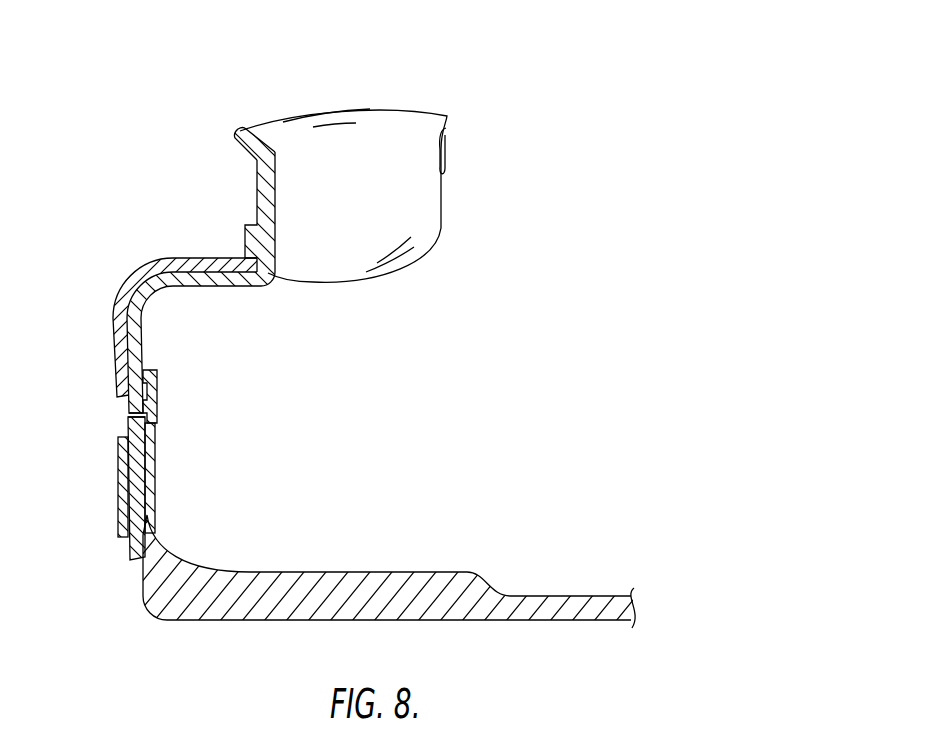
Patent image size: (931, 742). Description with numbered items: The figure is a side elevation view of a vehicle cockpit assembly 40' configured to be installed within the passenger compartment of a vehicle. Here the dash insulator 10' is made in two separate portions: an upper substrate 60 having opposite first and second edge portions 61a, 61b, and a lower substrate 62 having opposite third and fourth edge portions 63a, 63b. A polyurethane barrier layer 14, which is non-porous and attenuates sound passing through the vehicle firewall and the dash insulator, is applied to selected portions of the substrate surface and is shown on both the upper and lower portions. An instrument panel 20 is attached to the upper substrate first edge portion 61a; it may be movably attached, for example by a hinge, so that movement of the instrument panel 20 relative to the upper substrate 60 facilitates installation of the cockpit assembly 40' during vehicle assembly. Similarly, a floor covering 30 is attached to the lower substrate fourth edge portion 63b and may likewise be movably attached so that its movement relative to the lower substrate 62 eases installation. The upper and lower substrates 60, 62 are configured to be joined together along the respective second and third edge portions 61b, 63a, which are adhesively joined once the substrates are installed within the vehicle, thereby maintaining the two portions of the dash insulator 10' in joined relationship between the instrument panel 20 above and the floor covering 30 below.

The dash insulator 10' is at (203, 71).
The polyurethane barrier layer 14 is at (133, 273).
The instrument panel 20 is at (451, 117).
The floor covering 30 is at (472, 575).
The vehicle cockpit assembly 40' is at (628, 139).
The upper substrate 60 is at (255, 197).
The first edge portion 61a is at (273, 150).
The second edge portion 61b is at (132, 411).
The lower substrate 62 is at (128, 553).
The third edge portion 63a is at (157, 389).
The fourth edge portion 63b is at (145, 528).